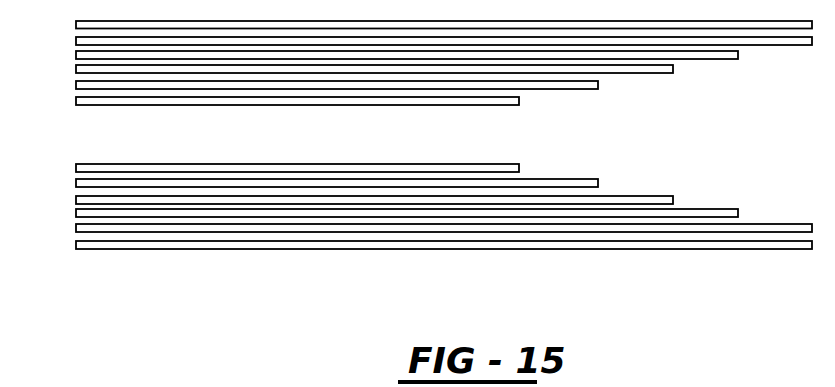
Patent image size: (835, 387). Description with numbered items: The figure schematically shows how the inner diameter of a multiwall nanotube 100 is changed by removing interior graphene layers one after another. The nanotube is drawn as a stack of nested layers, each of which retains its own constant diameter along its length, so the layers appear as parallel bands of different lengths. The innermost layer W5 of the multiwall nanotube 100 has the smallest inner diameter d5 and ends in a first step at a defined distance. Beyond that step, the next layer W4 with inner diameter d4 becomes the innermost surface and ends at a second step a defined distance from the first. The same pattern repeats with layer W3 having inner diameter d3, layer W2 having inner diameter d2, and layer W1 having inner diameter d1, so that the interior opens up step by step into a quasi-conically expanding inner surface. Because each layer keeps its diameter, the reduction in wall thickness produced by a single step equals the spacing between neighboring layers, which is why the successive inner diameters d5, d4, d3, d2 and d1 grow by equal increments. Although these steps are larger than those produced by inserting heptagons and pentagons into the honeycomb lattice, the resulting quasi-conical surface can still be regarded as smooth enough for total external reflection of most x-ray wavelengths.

The multiwall nanotube 100 is at (220, 250).
The layer w1 W1 is at (77, 229).
The layer w2 W2 is at (77, 213).
The layer w3 W3 is at (77, 199).
The layer w4 W4 is at (77, 185).
The innermost layer w5 W5 is at (77, 168).
The inner diameter d1 is at (784, 45).
The inner diameter d2 is at (716, 59).
The inner diameter d3 is at (646, 73).
The inner diameter d4 is at (564, 89).
The inner diameter d5 is at (377, 105).